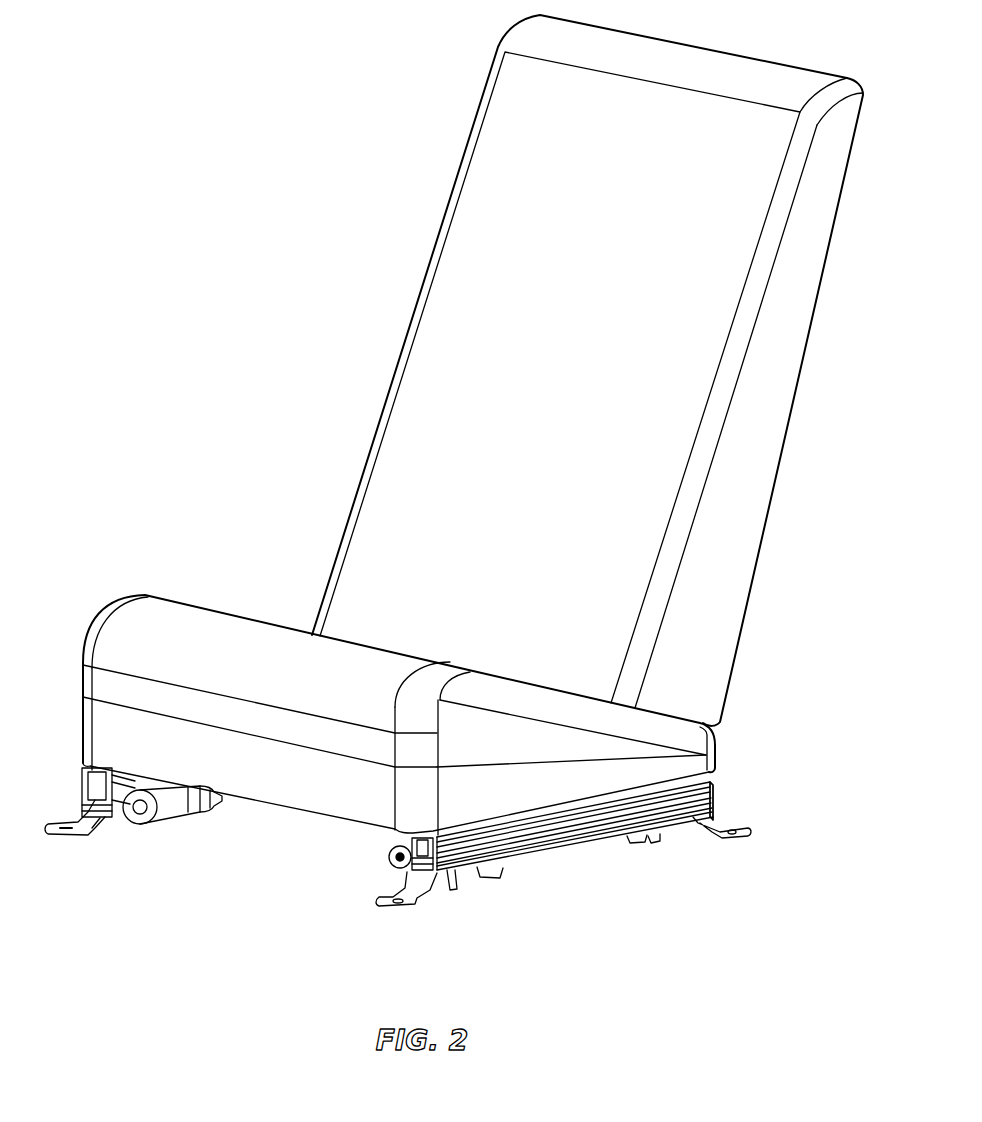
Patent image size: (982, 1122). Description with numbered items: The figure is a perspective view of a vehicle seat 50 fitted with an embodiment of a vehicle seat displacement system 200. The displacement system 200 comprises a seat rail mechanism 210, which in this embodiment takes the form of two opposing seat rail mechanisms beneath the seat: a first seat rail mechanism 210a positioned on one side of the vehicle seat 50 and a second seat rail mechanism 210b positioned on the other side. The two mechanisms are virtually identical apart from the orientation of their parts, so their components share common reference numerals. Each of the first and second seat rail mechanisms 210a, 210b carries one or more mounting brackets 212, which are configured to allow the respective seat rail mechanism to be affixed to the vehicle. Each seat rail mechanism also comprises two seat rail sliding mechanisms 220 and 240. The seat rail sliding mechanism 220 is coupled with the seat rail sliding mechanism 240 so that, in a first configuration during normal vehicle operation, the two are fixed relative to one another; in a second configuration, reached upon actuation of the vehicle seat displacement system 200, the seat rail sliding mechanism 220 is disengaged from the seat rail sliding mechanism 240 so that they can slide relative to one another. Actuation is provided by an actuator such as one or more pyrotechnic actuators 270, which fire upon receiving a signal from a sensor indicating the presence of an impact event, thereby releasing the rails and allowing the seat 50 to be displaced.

The vehicle seat 50 is at (587, 370).
The vehicle seat displacement system 200 is at (273, 882).
The seat rail mechanism 210 is at (772, 808).
The first seat rail mechanism 210a is at (588, 860).
The second seat rail mechanism 210b is at (117, 838).
The mounting bracket 212 is at (63, 838).
The seat rail sliding mechanism 220 is at (528, 866).
The seat rail sliding mechanism 240 is at (717, 793).
The pyrotechnic actuator 270 is at (175, 812).